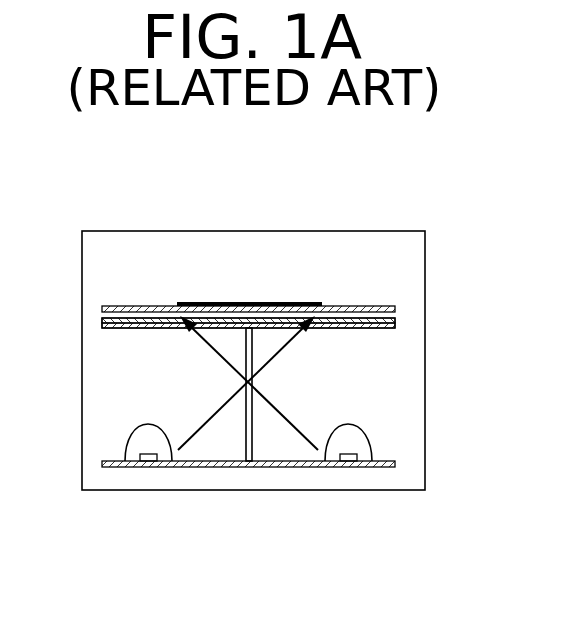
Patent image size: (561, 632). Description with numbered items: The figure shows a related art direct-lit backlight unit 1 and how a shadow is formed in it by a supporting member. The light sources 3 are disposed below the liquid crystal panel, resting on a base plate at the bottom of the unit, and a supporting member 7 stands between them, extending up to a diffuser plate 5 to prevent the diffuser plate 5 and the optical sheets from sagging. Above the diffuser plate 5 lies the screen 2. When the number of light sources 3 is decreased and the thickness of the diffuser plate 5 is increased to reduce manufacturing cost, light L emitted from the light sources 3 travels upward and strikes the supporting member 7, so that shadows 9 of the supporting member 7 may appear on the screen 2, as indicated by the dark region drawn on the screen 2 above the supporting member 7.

The direct-lit backlight unit 1 is at (100, 379).
The screen 2 is at (110, 308).
The light sources 3 is at (131, 437).
The diffuser plate 5 is at (106, 325).
The supporting member 7 is at (246, 397).
The shadows 9 is at (188, 302).
The light L is at (279, 413).